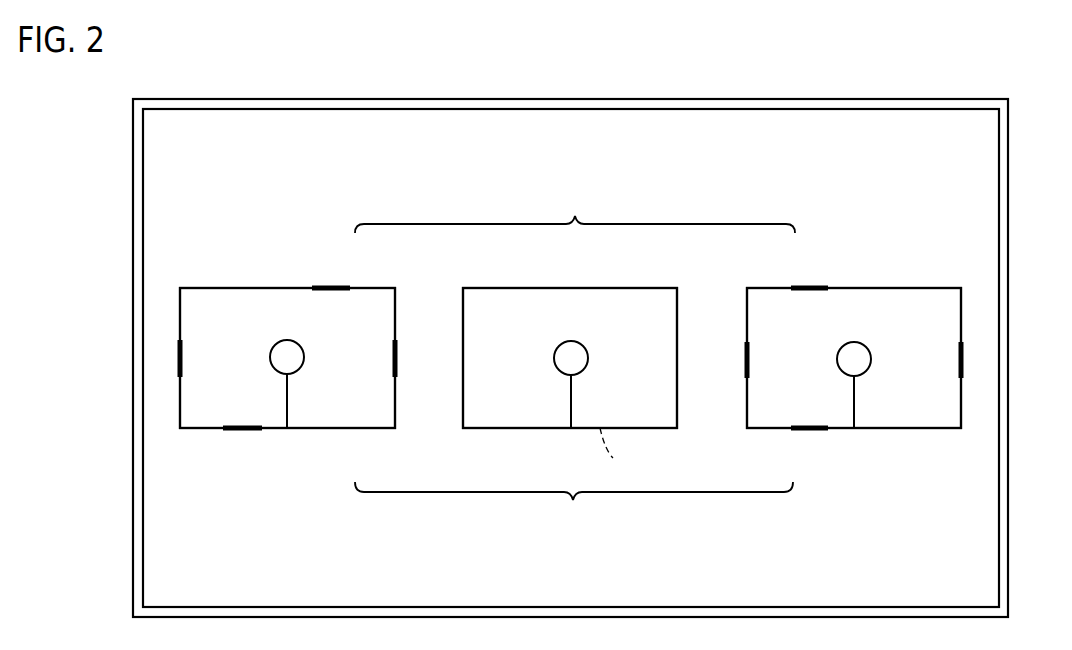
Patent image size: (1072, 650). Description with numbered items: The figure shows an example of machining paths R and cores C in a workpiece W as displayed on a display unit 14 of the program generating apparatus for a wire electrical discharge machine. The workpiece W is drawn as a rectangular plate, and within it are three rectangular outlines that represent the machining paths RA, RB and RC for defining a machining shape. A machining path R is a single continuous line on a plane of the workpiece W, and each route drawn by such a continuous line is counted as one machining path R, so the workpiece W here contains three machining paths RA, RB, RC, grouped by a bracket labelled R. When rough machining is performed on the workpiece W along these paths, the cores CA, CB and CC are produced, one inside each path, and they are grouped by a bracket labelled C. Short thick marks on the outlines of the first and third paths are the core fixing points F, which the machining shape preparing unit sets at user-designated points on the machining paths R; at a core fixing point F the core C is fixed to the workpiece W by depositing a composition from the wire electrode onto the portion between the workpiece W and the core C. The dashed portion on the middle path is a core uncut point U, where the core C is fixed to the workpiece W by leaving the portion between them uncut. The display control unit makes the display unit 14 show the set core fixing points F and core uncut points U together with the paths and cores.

The display unit 14 is at (803, 99).
The workpiece W is at (973, 172).
The machining path R is at (575, 214).
The machining path RA is at (370, 288).
The machining path RB is at (536, 288).
The machining path RC is at (767, 288).
The core C is at (574, 503).
The core CA is at (370, 430).
The core CB is at (535, 430).
The core CC is at (767, 430).
The core fixing point F is at (334, 288).
The core uncut point U is at (603, 448).